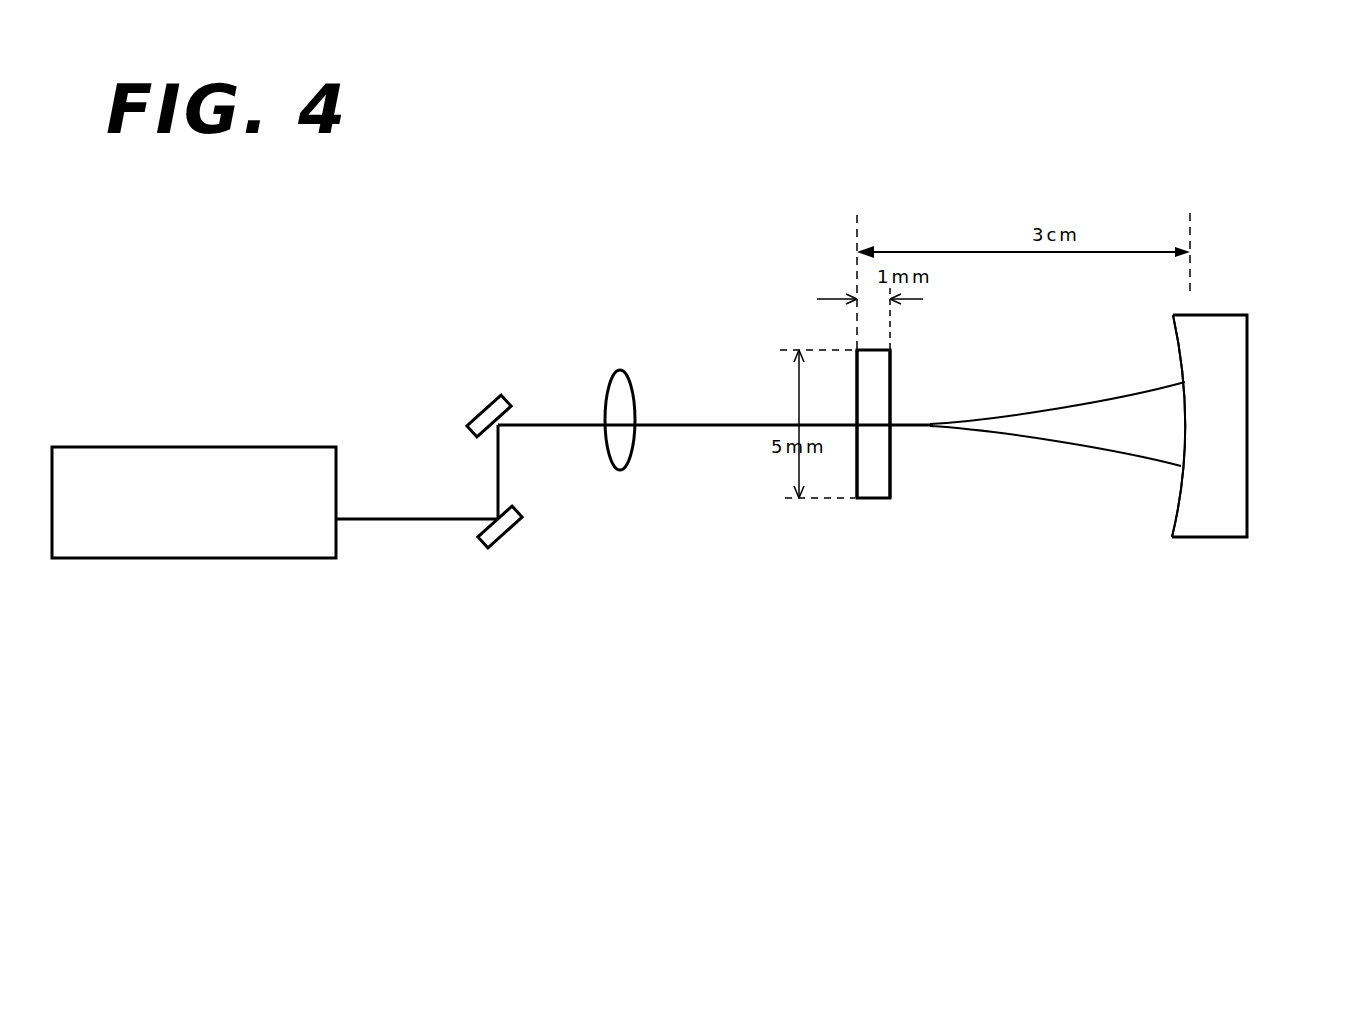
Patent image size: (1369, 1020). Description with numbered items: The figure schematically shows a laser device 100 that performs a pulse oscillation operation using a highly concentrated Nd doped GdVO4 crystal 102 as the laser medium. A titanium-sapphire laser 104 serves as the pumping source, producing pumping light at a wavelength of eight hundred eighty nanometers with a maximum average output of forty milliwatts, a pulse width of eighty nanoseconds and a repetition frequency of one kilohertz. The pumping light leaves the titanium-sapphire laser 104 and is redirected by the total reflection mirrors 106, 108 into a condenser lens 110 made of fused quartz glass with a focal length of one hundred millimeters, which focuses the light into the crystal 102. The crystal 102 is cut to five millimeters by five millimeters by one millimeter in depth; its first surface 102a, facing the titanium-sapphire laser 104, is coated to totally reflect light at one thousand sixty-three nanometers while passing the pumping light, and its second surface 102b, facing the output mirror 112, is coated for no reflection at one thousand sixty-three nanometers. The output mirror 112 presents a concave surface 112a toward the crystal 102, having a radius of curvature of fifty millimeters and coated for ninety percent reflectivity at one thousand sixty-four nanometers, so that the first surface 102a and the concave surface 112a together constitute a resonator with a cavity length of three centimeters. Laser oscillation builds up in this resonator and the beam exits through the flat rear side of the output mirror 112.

The laser device 100 is at (520, 275).
The highly concentrated Nd doped GdVO4 crystal 102 is at (873, 499).
The first surface 102a is at (857, 480).
The second surface 102b is at (891, 478).
The titanium-sapphire laser 104 is at (213, 456).
The total reflection mirror 106 is at (480, 537).
The total reflection mirror 108 is at (480, 407).
The condenser lens 110 is at (608, 380).
The output mirror 112 is at (1247, 326).
The concave surface 112a is at (1173, 520).